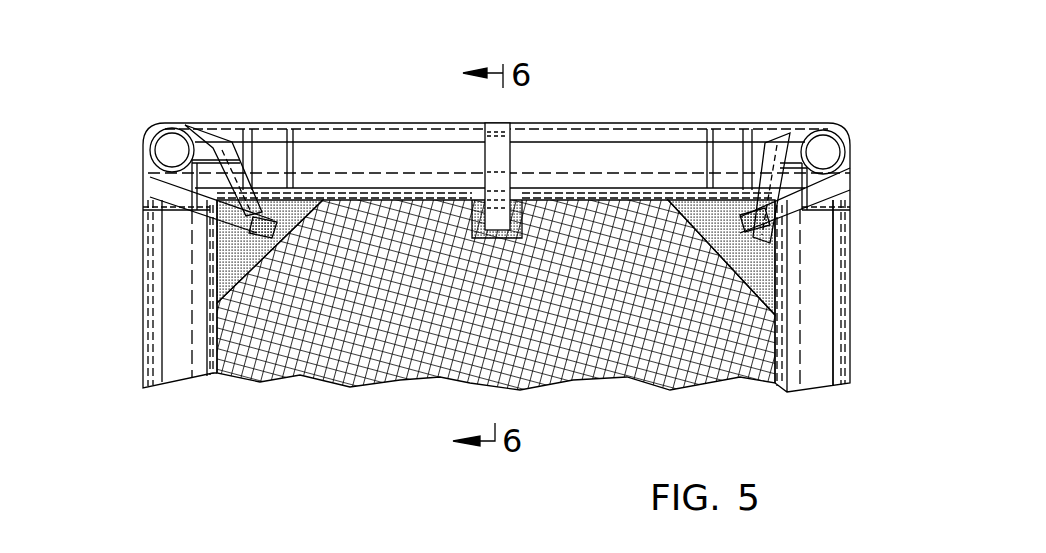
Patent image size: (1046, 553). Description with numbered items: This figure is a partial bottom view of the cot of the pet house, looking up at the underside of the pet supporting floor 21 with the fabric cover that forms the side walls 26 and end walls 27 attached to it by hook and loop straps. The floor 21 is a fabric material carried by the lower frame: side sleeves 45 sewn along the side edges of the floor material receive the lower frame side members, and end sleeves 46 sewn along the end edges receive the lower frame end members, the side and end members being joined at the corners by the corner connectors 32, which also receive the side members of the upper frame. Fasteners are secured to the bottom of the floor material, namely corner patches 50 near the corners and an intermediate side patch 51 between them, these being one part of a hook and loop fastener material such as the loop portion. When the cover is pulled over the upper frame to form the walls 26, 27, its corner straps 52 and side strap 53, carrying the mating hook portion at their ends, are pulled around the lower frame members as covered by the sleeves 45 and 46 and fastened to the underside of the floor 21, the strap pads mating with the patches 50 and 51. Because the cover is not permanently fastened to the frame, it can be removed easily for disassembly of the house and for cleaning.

The pet supporting floor 21 is at (785, 290).
The side walls 26 is at (380, 122).
The end walls 27 is at (143, 348).
The corner connectors 32 is at (150, 175).
The side sleeves 45 is at (623, 157).
The end sleeves 46 is at (177, 295).
The corner patches 50 is at (287, 187).
The intermediate side patches 51 is at (510, 207).
The corner straps 52 is at (233, 125).
The side straps 53 is at (498, 158).